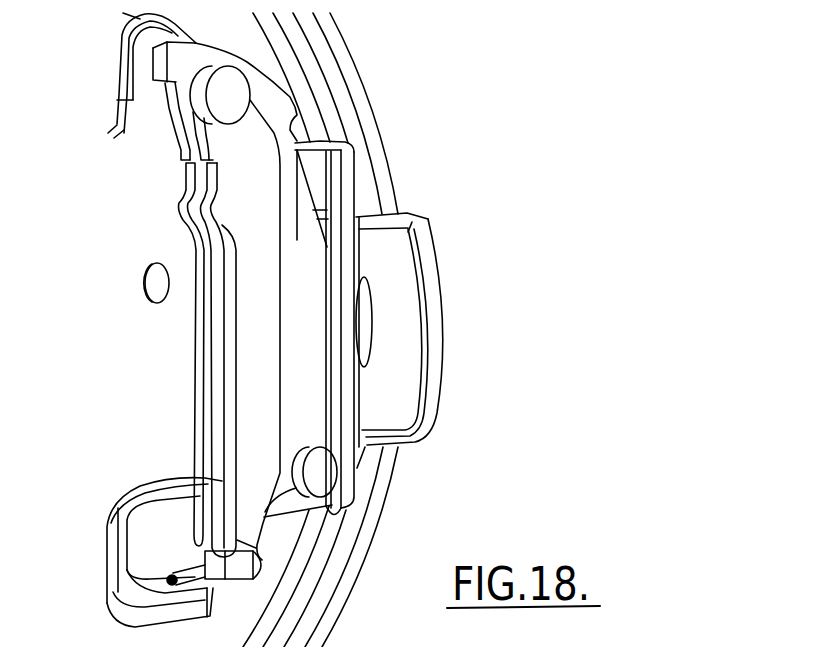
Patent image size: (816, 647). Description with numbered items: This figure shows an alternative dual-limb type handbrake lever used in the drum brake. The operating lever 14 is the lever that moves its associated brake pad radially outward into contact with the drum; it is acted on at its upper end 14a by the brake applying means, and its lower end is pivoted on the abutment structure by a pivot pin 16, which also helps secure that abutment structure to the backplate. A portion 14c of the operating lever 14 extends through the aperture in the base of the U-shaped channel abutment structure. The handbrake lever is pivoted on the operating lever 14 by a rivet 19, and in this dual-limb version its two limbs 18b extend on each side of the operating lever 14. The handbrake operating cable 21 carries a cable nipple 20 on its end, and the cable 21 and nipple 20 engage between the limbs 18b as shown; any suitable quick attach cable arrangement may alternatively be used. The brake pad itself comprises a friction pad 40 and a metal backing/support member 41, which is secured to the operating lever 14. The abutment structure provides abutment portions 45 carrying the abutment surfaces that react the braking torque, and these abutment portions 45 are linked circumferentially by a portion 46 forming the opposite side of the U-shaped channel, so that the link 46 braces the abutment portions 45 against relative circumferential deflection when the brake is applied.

The operating lever 14 is at (330, 307).
The upper end of operating lever 14a is at (165, 68).
The portion of operating lever 14c is at (365, 332).
The pivot pin 16 is at (313, 473).
The limbs of handbrake lever 18b is at (236, 403).
The rivet 19 is at (233, 90).
The nipple 20 is at (264, 566).
The handbrake operating cable 21 is at (186, 562).
The friction pad 40 is at (430, 280).
The backing/support member 41 is at (412, 218).
The abutment portions 45 is at (347, 177).
The link portion 46 is at (347, 370).